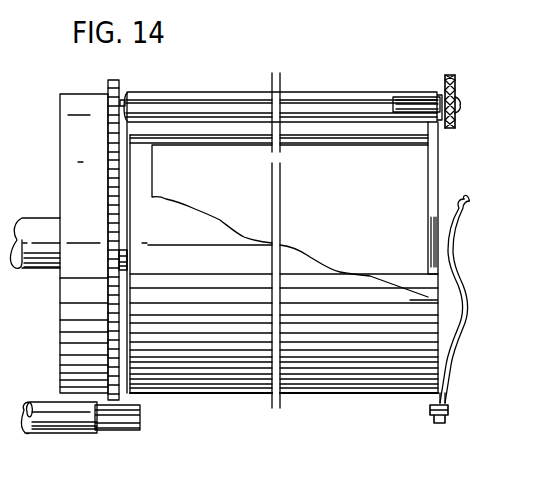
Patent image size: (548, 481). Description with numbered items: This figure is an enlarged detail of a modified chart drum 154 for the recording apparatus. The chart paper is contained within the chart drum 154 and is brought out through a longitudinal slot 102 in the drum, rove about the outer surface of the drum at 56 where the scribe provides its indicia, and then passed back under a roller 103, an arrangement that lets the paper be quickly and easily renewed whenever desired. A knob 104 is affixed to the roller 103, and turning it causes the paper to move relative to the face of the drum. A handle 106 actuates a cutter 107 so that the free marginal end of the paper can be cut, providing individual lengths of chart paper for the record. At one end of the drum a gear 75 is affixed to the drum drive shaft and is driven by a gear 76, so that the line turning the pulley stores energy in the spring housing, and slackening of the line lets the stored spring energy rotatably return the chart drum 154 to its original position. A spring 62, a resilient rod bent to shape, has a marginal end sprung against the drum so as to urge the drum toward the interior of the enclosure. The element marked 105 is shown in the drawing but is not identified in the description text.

The chart paper on drum surface 56 is at (215, 206).
The spring 62 is at (467, 213).
The gear 75 is at (108, 86).
The gear 76 is at (127, 432).
The longitudinal slot 102 is at (310, 140).
The roller 103 is at (199, 92).
The knob 104 is at (457, 78).
The spring arm 105 is at (457, 352).
The handle 106 is at (412, 100).
The cutter 107 is at (293, 117).
The chart drum 154 is at (232, 396).